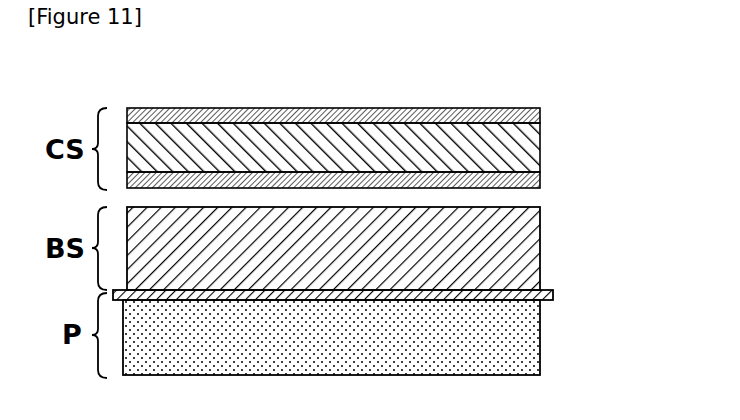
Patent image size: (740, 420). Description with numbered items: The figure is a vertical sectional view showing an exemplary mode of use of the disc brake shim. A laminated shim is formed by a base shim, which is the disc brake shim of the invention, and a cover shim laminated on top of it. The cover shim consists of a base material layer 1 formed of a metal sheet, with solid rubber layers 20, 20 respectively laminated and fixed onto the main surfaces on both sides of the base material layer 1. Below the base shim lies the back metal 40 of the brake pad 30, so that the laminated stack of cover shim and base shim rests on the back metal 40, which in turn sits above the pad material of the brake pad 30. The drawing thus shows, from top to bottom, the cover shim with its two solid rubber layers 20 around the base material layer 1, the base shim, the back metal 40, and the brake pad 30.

The solid rubber layer 20 is at (540, 112).
The base material layer 1 is at (540, 145).
The back metal 40 is at (553, 297).
The brake pad 30 is at (530, 335).